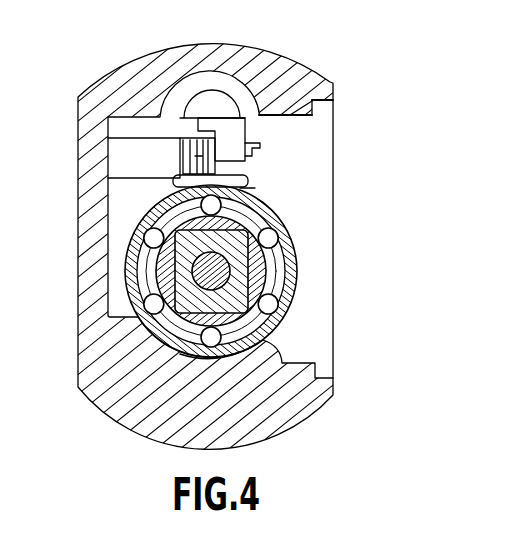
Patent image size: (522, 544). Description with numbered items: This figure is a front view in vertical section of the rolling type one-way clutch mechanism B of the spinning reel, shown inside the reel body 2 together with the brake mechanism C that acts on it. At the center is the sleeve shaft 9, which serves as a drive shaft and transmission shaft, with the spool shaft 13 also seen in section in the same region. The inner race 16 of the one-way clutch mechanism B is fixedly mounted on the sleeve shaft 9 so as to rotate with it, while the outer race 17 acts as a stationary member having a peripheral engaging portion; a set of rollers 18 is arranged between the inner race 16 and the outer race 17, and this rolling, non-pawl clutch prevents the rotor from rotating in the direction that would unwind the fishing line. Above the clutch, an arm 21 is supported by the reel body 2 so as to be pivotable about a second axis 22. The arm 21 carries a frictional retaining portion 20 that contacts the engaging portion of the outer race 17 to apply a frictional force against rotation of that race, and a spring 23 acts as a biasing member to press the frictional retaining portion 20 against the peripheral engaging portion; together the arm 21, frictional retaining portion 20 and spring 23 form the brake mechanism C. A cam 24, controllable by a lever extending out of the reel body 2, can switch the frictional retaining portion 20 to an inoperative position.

The reel body 2 is at (298, 408).
The sleeve shaft 9 is at (197, 334).
The spool shaft 13 is at (197, 272).
The inner race 16 is at (258, 281).
The outer race 17 is at (289, 262).
The rollers 18 is at (150, 236).
The frictional retaining portion 20 is at (172, 178).
The arm 21 is at (312, 100).
The second axis 22 is at (233, 140).
The spring 23 is at (182, 182).
The cam 24 is at (223, 107).
The one-way clutch mechanism B is at (260, 194).
The brake mechanism C is at (270, 181).